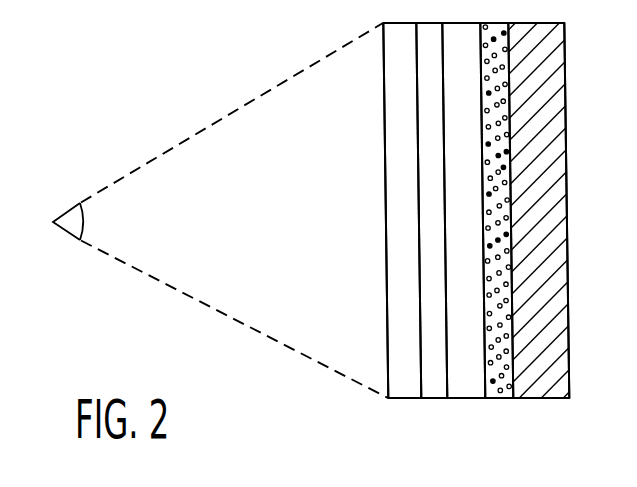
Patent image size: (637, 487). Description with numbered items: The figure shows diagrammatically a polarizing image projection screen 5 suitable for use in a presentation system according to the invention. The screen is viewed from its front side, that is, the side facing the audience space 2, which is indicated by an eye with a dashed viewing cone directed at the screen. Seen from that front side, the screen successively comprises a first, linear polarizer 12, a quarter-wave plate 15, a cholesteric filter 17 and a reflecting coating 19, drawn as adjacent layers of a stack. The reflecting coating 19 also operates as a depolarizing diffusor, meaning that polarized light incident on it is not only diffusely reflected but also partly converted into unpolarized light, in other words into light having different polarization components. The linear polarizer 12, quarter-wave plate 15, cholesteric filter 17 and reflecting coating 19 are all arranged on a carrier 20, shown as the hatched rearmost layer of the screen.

The audience space 2 is at (46, 272).
The image projection screen 5 is at (308, 436).
The first linear polarizer 12 is at (403, 408).
The λ/4 plate 15 is at (436, 408).
The cholesteric filter 17 is at (468, 408).
The reflecting coating 19 is at (506, 408).
The carrier 20 is at (548, 408).